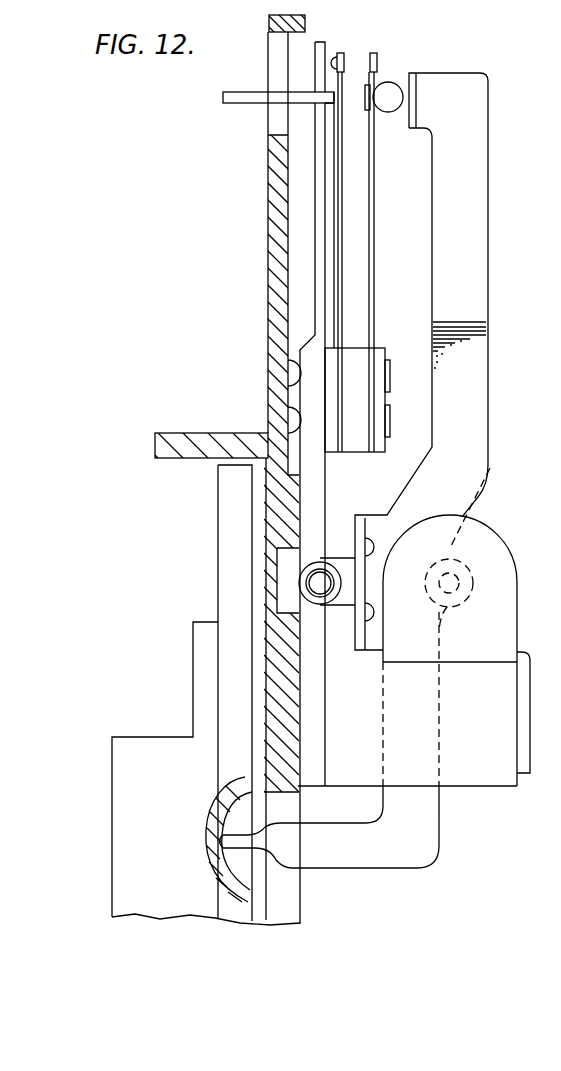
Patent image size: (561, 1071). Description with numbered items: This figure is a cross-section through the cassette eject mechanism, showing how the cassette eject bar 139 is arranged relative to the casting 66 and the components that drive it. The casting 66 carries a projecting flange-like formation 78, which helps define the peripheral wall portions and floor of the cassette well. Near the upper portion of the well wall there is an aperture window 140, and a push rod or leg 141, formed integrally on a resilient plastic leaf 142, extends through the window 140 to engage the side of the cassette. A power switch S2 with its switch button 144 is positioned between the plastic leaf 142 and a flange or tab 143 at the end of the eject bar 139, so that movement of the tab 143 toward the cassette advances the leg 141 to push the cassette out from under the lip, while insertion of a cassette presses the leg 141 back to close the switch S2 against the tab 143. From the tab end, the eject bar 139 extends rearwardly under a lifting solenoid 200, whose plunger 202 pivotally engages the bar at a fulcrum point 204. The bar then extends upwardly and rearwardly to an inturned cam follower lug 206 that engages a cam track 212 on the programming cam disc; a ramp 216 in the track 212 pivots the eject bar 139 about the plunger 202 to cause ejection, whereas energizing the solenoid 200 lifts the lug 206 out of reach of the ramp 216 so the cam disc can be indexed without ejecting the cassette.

The aperture window 140 is at (287, 20).
The push rod or leg 141 is at (243, 98).
The resilient plastic leaf 142 is at (315, 138).
The power switch S2 is at (357, 70).
The switch button 144 is at (390, 92).
The flange or tab 143 is at (416, 108).
The fulcrum point 204 is at (268, 228).
The cassette eject bar 139 is at (494, 342).
The flange-like formation 78 is at (197, 458).
The casting 66 is at (280, 706).
The plunger 202 is at (436, 627).
The lifting solenoid 200 is at (517, 619).
The cam track 212 is at (228, 816).
The cam follower lug 206 is at (290, 843).
The ramp 216 is at (245, 868).